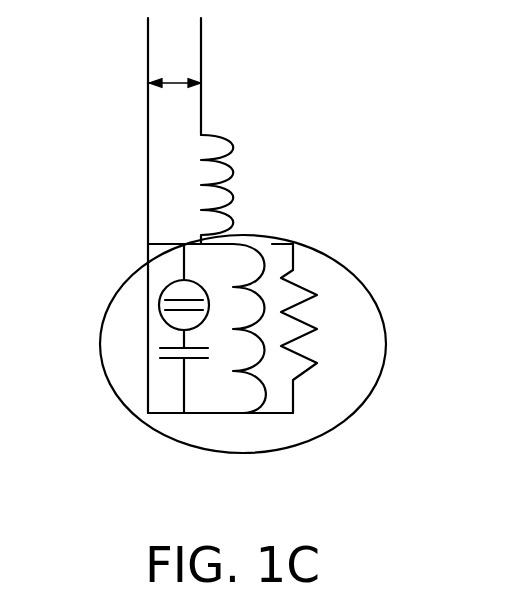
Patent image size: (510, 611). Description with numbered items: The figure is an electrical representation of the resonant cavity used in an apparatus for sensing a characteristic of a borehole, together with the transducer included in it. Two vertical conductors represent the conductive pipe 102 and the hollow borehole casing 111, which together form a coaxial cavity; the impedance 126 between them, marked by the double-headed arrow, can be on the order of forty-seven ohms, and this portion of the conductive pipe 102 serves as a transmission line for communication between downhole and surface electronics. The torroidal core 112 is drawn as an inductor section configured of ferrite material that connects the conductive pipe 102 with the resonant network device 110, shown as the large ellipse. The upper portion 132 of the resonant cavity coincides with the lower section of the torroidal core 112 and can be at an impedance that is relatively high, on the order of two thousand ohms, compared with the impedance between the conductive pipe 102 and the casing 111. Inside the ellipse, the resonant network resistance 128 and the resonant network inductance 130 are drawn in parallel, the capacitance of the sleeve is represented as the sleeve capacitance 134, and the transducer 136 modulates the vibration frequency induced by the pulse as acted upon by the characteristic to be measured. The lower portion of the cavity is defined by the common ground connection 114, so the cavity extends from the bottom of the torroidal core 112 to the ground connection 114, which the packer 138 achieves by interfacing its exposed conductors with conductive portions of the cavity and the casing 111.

The conductive pipe 102 is at (201, 100).
The resonant network device 110 is at (350, 265).
The hollow borehole casing 111 is at (148, 123).
The torroidal core 112 is at (238, 171).
The common ground connection 114 is at (250, 422).
The impedance 126 is at (173, 80).
The resonant network resistance 128 is at (318, 330).
The resonant network inductance 130 is at (256, 389).
The upper portion of the resonant cavity 132 is at (166, 243).
The sleeve capacitance 134 is at (134, 355).
The transducer 136 is at (140, 306).
The packer 138 is at (210, 430).